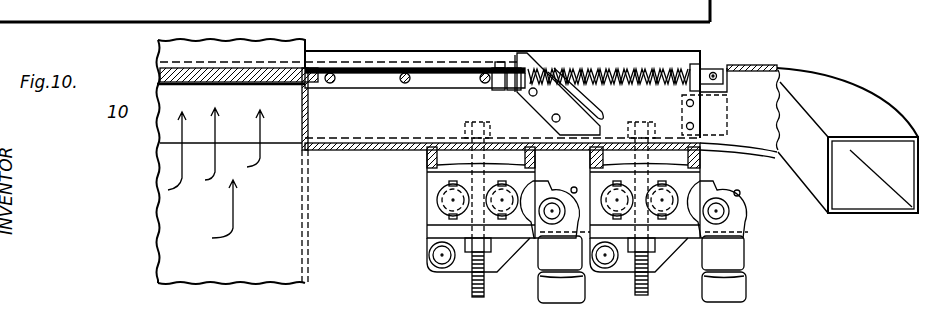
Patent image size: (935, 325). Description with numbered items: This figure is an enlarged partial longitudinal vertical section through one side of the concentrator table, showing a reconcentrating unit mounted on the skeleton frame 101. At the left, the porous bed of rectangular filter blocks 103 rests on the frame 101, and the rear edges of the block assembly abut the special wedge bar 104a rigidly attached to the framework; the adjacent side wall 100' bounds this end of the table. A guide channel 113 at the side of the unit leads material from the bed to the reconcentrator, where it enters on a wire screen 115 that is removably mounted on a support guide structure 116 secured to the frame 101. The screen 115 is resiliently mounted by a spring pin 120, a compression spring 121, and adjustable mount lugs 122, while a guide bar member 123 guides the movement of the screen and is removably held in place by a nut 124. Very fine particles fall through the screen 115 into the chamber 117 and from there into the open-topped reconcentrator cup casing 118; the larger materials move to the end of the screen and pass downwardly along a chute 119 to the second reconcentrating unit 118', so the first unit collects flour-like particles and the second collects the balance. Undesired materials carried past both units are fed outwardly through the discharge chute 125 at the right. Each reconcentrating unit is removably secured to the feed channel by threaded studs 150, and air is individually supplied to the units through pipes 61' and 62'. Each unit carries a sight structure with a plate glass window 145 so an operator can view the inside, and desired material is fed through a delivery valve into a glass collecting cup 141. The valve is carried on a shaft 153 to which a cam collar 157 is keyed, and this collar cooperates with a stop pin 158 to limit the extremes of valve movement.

The guide channel 113 is at (185, 52).
The filter block 103 is at (228, 62).
The special wedge bar 104a is at (292, 72).
The skeleton frame 101 is at (160, 150).
The side wall 100' is at (319, 176).
The screen 115 is at (423, 68).
The support guide structure 116 is at (428, 80).
The adjustable mount lug 122 is at (519, 68).
The compression spring 121 is at (568, 75).
The spring pin 120 is at (624, 72).
The guide bar member 123 is at (706, 63).
The nut 124 is at (720, 69).
The chute 119 is at (566, 96).
The chamber 117 is at (363, 145).
The reconcentrator cup casing 118 is at (456, 192).
The plate glass window 145 is at (445, 207).
The pipe 61' is at (455, 254).
The threaded stud 150 is at (472, 283).
The pipe 62' is at (639, 272).
The second reconcentrating unit 118' is at (682, 192).
The stop pin 158 is at (574, 190).
The shaft 153 is at (533, 235).
The cam collar 157 is at (766, 229).
The collecting cup 141 is at (550, 288).
The discharge chute 125 is at (860, 247).